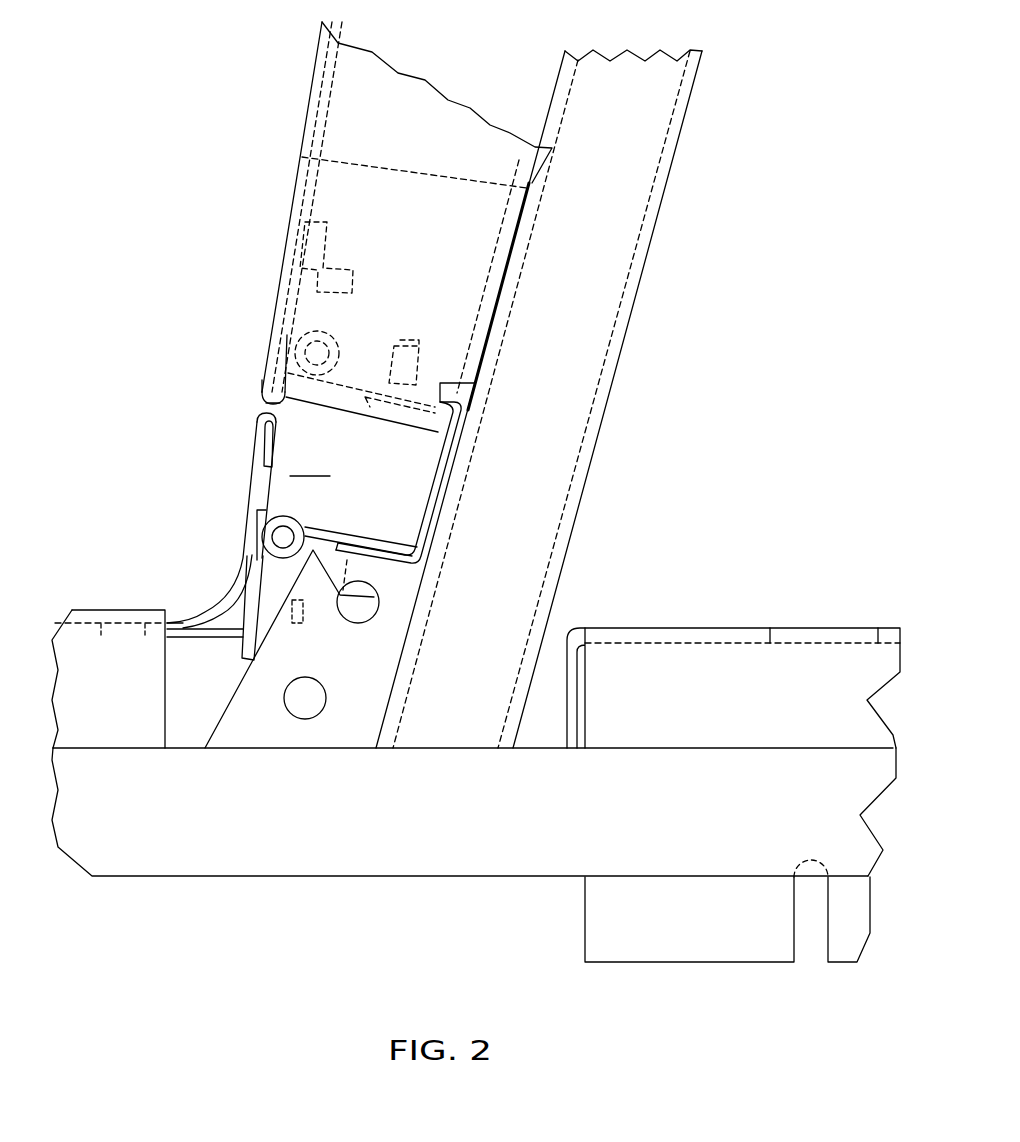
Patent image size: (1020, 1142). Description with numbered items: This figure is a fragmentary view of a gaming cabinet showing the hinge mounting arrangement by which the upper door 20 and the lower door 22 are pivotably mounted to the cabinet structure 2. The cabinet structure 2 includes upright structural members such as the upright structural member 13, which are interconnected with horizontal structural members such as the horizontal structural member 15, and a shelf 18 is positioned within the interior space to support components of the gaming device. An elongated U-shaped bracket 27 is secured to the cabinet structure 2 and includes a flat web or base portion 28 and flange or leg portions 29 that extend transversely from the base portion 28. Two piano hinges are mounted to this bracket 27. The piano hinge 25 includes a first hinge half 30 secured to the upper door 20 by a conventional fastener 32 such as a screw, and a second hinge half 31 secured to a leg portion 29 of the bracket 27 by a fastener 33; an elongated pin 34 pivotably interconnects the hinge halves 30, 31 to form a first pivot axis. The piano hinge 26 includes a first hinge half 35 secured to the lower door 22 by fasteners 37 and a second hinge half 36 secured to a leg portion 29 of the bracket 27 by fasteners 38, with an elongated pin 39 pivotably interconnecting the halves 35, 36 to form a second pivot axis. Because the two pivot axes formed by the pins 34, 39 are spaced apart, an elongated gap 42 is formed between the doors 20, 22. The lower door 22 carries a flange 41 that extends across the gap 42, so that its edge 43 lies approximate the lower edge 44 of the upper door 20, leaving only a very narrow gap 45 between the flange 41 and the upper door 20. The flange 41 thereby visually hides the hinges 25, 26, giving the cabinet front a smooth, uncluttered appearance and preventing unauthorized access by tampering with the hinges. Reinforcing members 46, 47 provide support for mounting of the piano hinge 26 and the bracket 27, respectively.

The cabinet structure 2 is at (686, 149).
The upright structural member 13 is at (656, 250).
The horizontal structural member 15 is at (250, 873).
The shelf 18 is at (630, 628).
The upper door 20 is at (305, 107).
The lower door 22 is at (97, 603).
The piano hinge 25 is at (260, 370).
The piano hinge 26 is at (265, 530).
The U-shaped bracket 27 is at (437, 443).
The base portion 28 is at (437, 485).
The leg portion 29 is at (405, 410).
The first hinge half 30 is at (303, 331).
The second hinge half 31 is at (355, 365).
The fastener 32 is at (340, 263).
The fastener 33 is at (405, 345).
The elongated pin 34 is at (306, 340).
The first hinge half 35 is at (243, 600).
The second hinge half 36 is at (405, 545).
The fastener 37 is at (267, 618).
The fastener 38 is at (380, 575).
The elongated pin 39 is at (274, 538).
The flange 41 is at (250, 478).
The gap 42 is at (310, 460).
The edge 43 is at (255, 417).
The lower edge 44 is at (258, 398).
The gap 45 is at (267, 408).
The reinforcing member 46 is at (206, 643).
The reinforcing member 47 is at (250, 737).